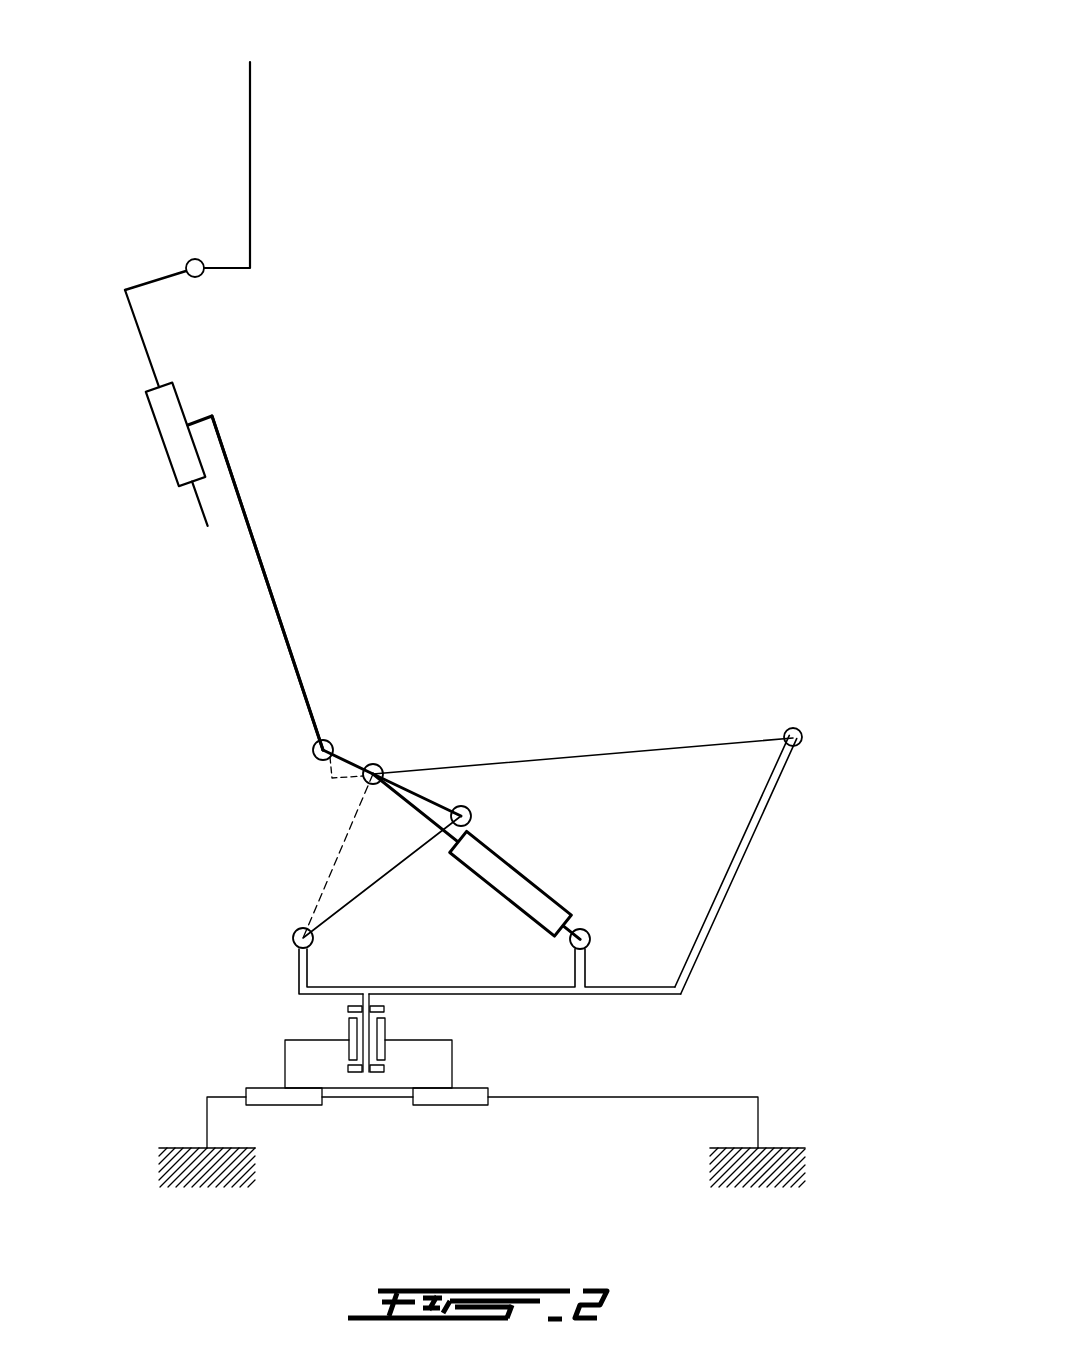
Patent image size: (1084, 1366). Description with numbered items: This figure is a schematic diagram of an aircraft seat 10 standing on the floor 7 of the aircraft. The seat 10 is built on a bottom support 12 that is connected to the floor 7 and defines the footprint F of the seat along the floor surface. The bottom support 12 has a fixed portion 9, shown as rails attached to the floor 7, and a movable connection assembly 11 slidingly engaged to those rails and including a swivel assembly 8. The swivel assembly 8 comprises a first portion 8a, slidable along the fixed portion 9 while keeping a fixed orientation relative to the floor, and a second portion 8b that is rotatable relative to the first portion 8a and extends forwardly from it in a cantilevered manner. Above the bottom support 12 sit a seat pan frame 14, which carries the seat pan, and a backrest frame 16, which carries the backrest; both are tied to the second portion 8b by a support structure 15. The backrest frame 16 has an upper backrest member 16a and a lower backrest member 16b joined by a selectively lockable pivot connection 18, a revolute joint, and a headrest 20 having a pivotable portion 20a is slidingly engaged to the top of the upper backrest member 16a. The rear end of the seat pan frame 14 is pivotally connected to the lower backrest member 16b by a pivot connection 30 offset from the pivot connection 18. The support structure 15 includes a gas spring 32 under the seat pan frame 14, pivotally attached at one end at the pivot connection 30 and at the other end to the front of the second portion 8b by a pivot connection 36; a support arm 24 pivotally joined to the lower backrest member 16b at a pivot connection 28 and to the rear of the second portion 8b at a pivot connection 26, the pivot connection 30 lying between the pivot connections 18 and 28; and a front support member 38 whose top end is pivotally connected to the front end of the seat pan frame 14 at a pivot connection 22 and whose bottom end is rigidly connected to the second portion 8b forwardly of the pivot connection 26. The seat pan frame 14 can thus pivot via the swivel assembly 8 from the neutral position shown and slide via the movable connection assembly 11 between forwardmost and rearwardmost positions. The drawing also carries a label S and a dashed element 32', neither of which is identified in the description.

The seat 10 is at (608, 188).
The headrest 20 is at (124, 290).
The pivotable portion 20a is at (250, 128).
The seat S is at (267, 366).
The backrest frame 16 is at (258, 524).
The upper backrest member 16a is at (279, 607).
The lower backrest member 16b is at (425, 784).
The selectively lockable pivot connection 18 is at (312, 752).
The pivot connection 30 is at (362, 775).
The seat pan frame 14 is at (682, 745).
The pivot connection 22 is at (796, 730).
The pivot connection 28 is at (471, 815).
The gas spring 32 is at (500, 856).
The damper alternative position 32' is at (302, 856).
The pivot connection 36 is at (590, 938).
The support arm 24 is at (346, 903).
The pivot connection 26 is at (293, 940).
The front support member 38 is at (785, 780).
The support structure 15 is at (875, 748).
The swivel assembly 8 is at (348, 1076).
The first portion 8a is at (452, 1052).
The second portion 8b is at (366, 1073).
The fixed portion 9 is at (571, 1098).
The floor 7 is at (789, 1160).
The movable connection assembly 11 is at (700, 995).
The bottom support 12 is at (775, 995).
The footprint F is at (758, 1211).